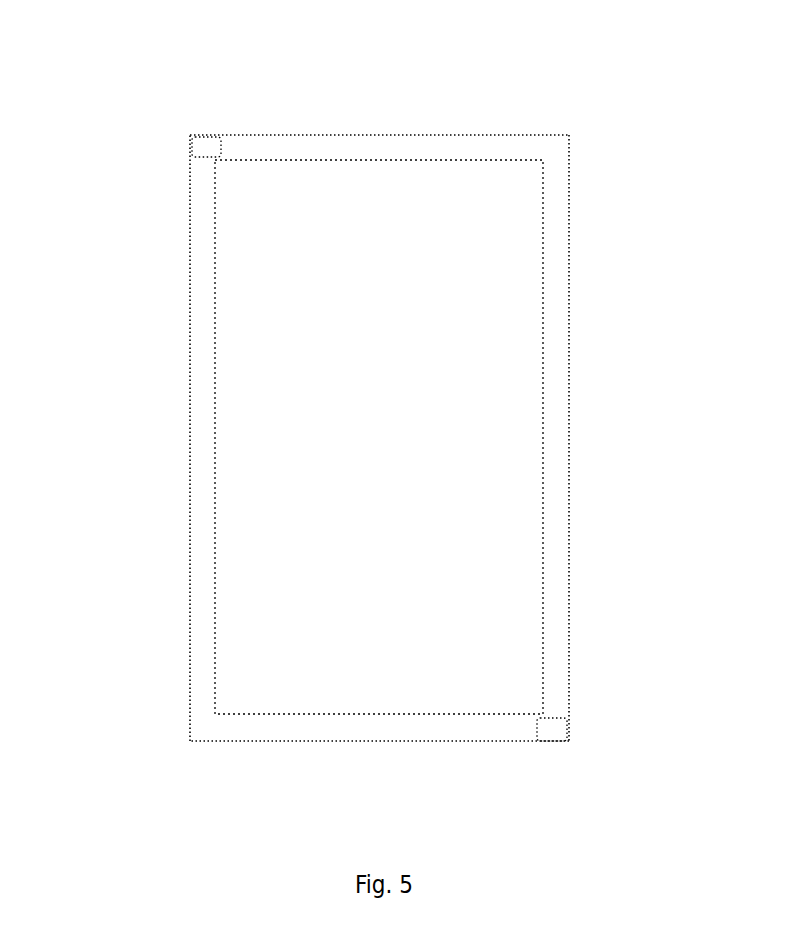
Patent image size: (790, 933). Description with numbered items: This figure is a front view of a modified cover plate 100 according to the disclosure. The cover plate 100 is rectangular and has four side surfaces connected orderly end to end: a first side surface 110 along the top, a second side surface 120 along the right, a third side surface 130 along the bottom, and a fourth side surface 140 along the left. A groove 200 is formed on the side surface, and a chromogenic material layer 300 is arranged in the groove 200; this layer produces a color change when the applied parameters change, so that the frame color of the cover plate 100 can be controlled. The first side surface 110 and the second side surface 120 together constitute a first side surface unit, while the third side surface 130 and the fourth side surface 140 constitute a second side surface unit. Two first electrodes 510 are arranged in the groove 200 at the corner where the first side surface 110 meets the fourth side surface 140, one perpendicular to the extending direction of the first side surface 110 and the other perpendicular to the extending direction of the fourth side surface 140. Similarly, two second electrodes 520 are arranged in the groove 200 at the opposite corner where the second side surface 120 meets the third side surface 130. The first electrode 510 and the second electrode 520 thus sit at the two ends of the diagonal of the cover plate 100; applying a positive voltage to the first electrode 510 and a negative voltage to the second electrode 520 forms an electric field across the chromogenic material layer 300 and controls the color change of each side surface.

The cover plate 100 is at (432, 96).
The first side surface 110 is at (302, 135).
The second side surface 120 is at (569, 287).
The third side surface 130 is at (377, 742).
The fourth side surface 140 is at (190, 257).
The groove 200 is at (215, 437).
The chromogenic material layer 300 is at (200, 375).
The first electrode 510 is at (213, 150).
The second electrode 520 is at (558, 719).